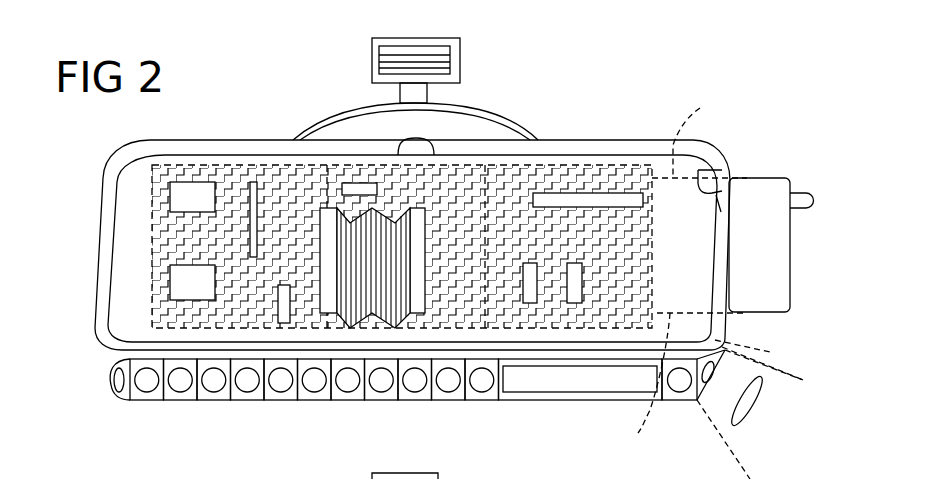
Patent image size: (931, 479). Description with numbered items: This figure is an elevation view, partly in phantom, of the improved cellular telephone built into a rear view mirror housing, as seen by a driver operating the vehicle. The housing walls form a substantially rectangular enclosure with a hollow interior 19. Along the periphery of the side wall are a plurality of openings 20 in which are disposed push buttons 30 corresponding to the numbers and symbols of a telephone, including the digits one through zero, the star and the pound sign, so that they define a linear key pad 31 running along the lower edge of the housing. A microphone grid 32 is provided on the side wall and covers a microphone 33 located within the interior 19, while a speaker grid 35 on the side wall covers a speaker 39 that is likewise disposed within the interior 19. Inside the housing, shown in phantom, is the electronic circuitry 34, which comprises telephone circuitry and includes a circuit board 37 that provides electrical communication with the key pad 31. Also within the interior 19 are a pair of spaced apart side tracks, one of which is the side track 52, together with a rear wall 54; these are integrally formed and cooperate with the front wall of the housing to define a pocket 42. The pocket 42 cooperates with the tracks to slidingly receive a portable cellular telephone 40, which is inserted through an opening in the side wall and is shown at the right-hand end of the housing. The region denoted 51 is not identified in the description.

The hollow interior 19 is at (125, 302).
The openings 20 is at (142, 400).
The push buttons 30 is at (413, 412).
The linear key pad 31 is at (272, 398).
The microphone grid 32 is at (736, 407).
The microphone 33 is at (759, 360).
The electronic circuitry 34 is at (157, 182).
The speaker grid 35 is at (338, 142).
The circuit board 37 is at (598, 197).
The speaker 39 is at (405, 152).
The cellular telephone 40 is at (763, 255).
The pocket 42 is at (717, 190).
The compartment region 51 is at (699, 137).
The side track 52 is at (677, 381).
The rear wall 54 is at (420, 223).